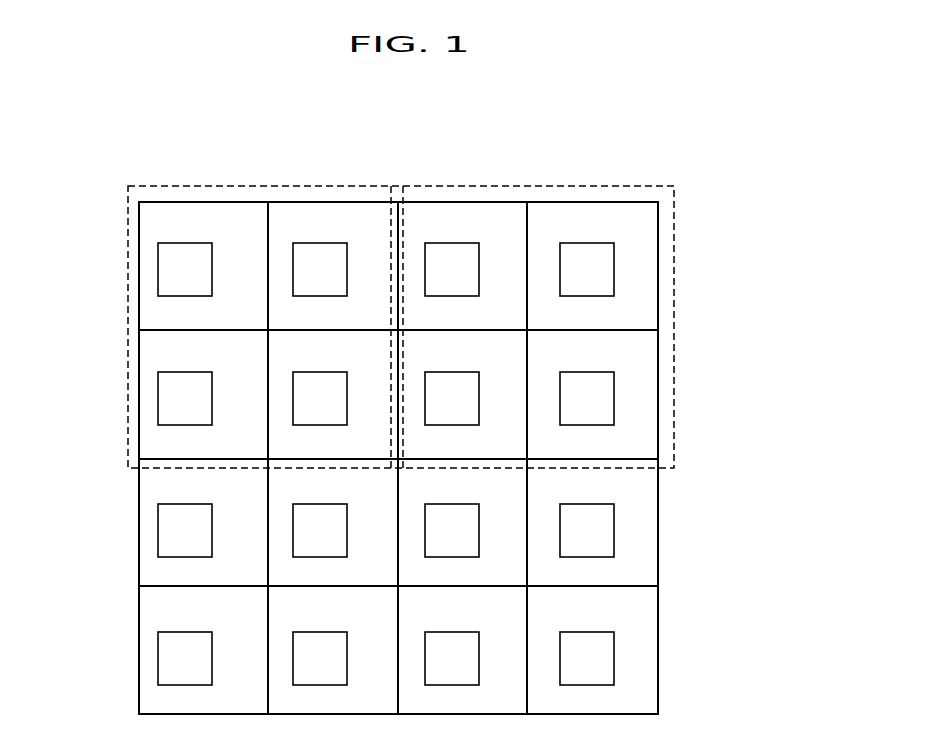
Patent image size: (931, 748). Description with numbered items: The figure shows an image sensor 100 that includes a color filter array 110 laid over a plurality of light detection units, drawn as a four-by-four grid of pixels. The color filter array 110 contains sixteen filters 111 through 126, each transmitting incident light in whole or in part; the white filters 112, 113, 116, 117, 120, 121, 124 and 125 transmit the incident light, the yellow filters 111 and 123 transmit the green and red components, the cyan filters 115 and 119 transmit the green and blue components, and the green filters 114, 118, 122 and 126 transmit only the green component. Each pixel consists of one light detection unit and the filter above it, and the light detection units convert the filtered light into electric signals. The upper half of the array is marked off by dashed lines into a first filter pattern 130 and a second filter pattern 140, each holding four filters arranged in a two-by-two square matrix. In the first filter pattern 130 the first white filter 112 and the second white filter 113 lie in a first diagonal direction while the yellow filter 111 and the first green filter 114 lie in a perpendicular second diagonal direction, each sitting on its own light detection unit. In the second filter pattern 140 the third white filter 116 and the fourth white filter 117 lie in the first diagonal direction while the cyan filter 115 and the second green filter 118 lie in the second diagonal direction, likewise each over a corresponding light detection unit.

The image sensor 100 is at (437, 124).
The color filter array 110 is at (640, 200).
The yellow filter 111 is at (218, 209).
The first white filter 112 is at (368, 209).
The second white filter 113 is at (240, 338).
The first green filter 114 is at (371, 338).
The cyan filter 115 is at (498, 209).
The third white filter 116 is at (578, 209).
The fourth white filter 117 is at (503, 338).
The second green filter 118 is at (635, 338).
The cyan filter 119 is at (241, 465).
The white filter 120 is at (374, 465).
The white filter 121 is at (244, 591).
The green filter 122 is at (375, 591).
The yellow filter 123 is at (505, 465).
The white filter 124 is at (635, 465).
The white filter 125 is at (510, 591).
The green filter 126 is at (638, 591).
The first filter pattern 130 is at (128, 309).
The second filter pattern 140 is at (676, 328).